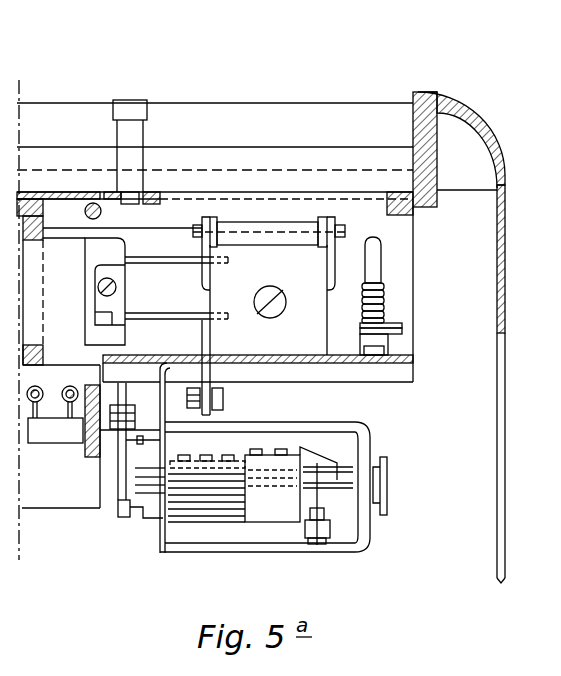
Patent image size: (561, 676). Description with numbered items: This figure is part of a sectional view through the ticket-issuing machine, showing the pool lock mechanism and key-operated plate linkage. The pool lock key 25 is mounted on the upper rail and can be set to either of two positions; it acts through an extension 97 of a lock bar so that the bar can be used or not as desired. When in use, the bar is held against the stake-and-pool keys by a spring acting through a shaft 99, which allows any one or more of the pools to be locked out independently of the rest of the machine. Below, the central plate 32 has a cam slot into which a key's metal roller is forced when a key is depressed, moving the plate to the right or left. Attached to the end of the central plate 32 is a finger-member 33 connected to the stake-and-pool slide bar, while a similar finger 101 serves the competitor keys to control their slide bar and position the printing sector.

The pool lock key 25 is at (138, 100).
The extension 97 is at (154, 204).
The shaft 99 is at (101, 212).
The central plate 32 is at (85, 337).
The finger-member 33 is at (150, 262).
The finger 101 is at (159, 316).